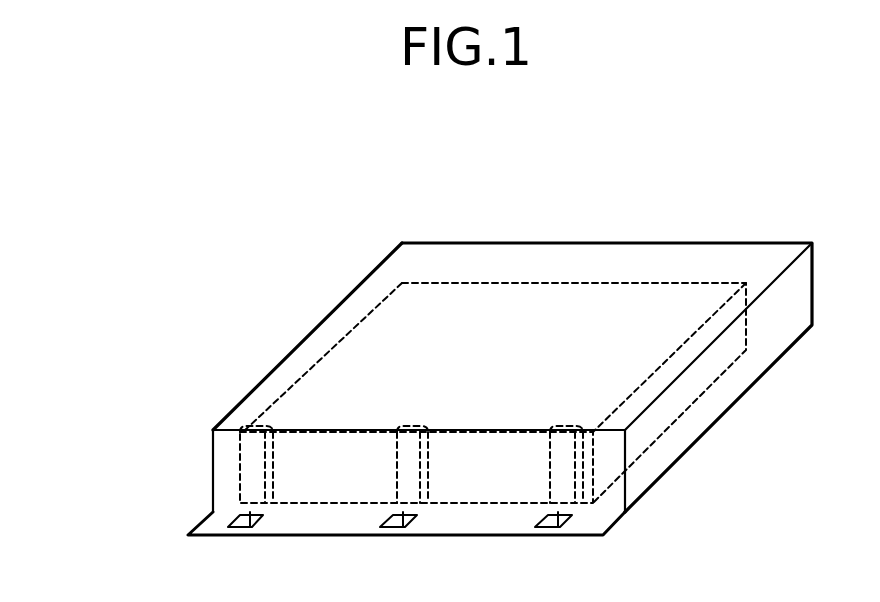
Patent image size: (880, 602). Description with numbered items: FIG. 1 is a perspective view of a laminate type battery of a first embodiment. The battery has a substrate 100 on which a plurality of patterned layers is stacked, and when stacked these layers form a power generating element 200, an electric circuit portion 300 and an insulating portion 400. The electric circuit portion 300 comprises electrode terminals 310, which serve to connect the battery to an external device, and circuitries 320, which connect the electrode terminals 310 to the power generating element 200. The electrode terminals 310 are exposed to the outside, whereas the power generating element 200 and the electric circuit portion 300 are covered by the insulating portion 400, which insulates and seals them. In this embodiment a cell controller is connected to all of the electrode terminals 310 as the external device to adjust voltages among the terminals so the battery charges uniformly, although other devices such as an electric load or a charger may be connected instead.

The substrate 100 is at (615, 520).
The power generating element 200 is at (687, 385).
The electric circuit portion 300 is at (118, 427).
The electrode terminals 310 is at (545, 520).
The circuitries 320 is at (560, 470).
The insulating portion 400 is at (770, 243).